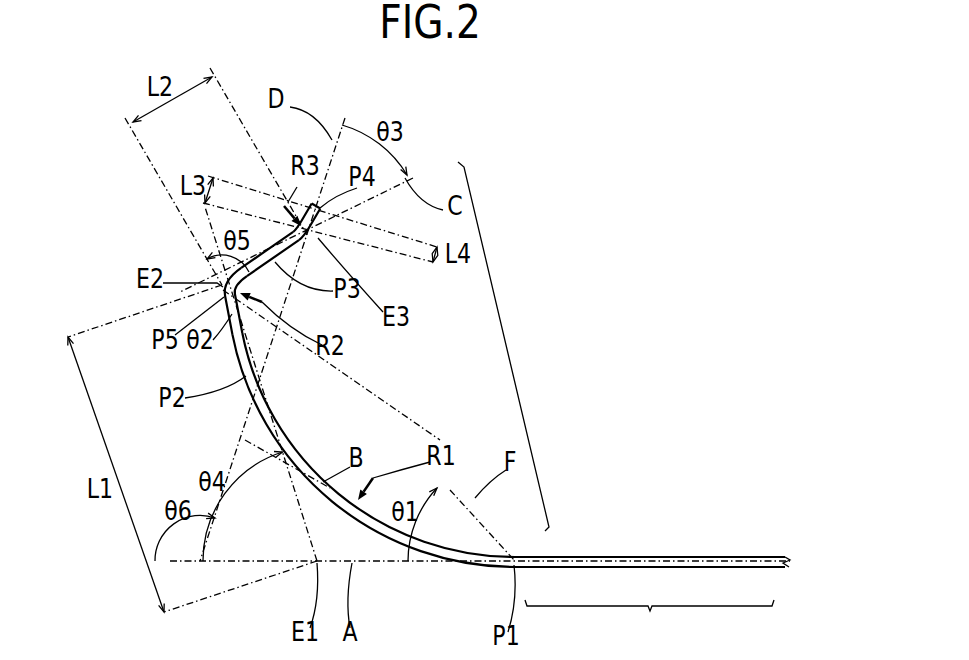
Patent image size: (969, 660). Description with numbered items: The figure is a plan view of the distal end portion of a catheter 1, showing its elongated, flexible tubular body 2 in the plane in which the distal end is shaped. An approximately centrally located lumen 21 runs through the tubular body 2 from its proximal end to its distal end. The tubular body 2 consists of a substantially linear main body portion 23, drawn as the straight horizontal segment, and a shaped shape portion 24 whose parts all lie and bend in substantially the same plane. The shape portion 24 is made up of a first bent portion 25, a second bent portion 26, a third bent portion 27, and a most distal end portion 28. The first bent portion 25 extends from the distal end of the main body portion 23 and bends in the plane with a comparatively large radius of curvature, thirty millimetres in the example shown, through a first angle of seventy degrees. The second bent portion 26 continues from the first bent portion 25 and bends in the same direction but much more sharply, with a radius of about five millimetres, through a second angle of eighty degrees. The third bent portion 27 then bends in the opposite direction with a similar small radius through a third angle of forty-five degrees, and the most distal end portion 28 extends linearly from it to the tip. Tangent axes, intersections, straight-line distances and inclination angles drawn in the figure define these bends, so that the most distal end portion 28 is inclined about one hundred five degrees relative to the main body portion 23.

The catheter 1 is at (57, 83).
The tubular body 2 is at (680, 556).
The lumen 21 is at (743, 556).
The main body portion 23 is at (649, 624).
The shape portion 24 is at (516, 347).
The first bent portion 25 is at (305, 468).
The second bent portion 26 is at (262, 295).
The third bent portion 27 is at (322, 250).
The most distal end portion 28 is at (322, 216).